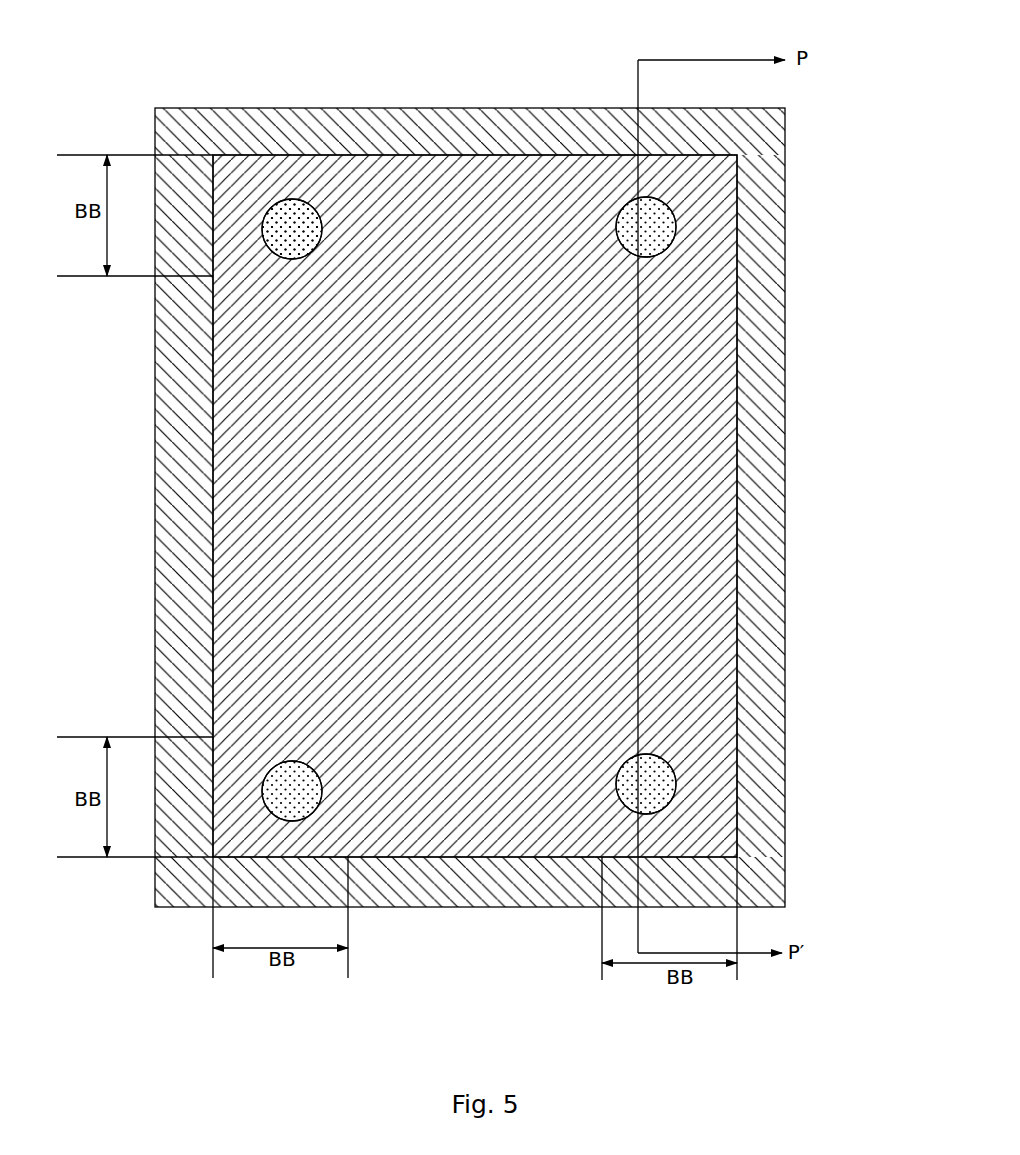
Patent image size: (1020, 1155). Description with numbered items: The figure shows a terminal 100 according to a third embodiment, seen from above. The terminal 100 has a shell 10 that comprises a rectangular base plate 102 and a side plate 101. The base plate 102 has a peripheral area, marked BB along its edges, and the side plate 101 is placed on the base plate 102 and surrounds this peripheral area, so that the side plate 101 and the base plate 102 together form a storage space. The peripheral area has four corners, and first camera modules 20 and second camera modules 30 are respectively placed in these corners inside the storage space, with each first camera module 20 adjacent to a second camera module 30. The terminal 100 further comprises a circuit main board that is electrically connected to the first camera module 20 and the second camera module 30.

The terminal 100 is at (524, 460).
The shell 10 is at (524, 507).
The side plate 101 is at (758, 343).
The base plate 102 is at (693, 427).
The first camera module 20 is at (663, 226).
The second camera module 30 is at (309, 224).